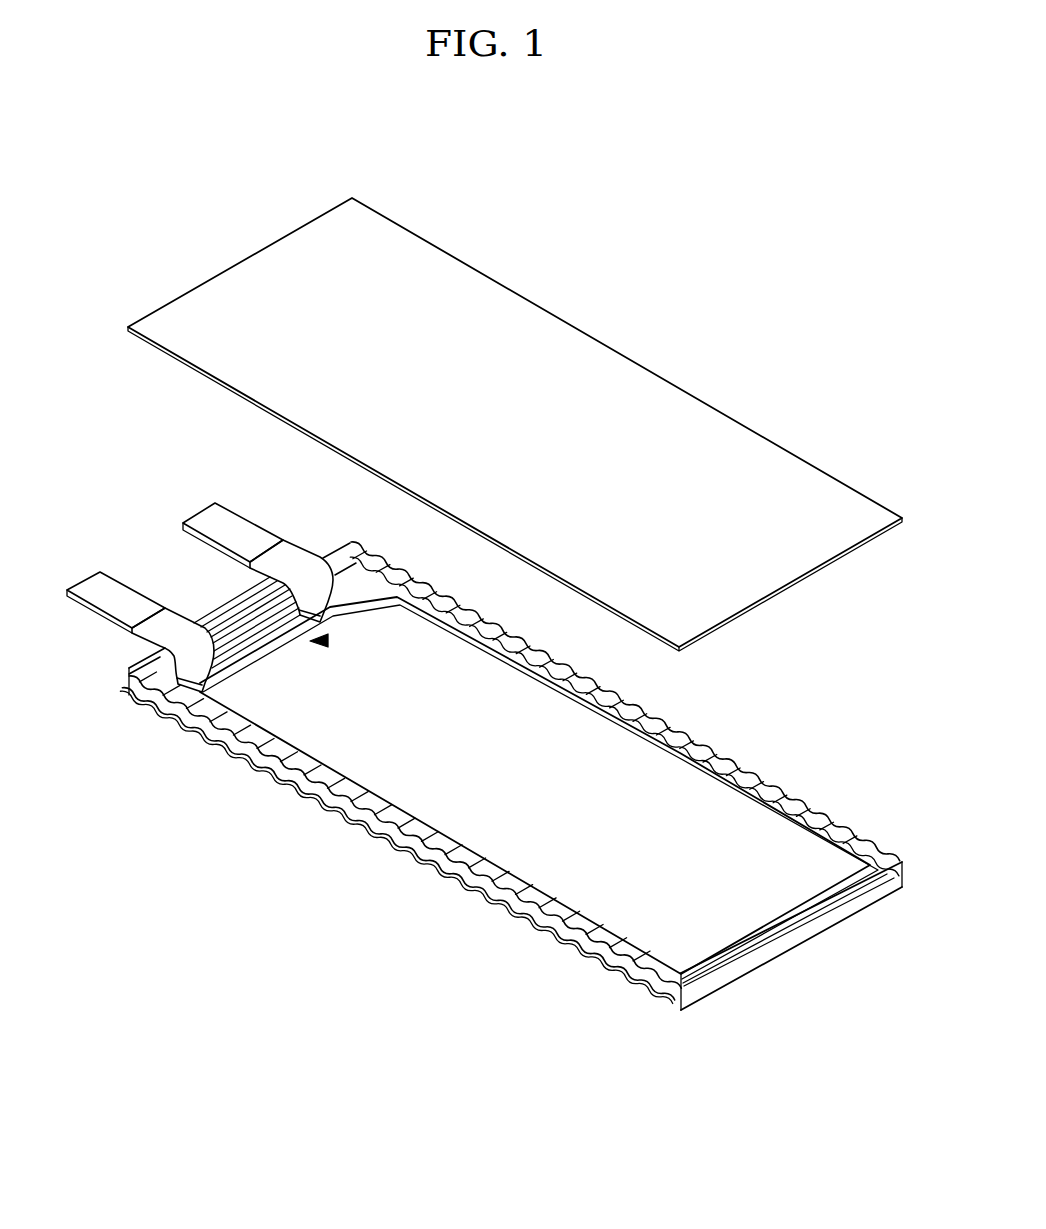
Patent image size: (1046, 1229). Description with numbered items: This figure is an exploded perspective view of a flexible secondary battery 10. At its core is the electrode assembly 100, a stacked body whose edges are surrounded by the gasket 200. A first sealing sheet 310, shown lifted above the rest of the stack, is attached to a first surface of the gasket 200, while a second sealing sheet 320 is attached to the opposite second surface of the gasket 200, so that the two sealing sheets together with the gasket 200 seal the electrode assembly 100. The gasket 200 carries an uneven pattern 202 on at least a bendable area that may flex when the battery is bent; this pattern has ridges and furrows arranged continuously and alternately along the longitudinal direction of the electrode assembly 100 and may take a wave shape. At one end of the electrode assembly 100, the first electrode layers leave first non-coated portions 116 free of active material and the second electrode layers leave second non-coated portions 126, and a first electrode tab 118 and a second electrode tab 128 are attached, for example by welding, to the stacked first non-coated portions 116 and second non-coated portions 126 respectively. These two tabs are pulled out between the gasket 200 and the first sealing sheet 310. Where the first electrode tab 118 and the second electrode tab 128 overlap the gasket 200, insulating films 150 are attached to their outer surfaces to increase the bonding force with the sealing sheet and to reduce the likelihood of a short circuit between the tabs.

The flexible secondary battery 10 is at (808, 383).
The electrode assembly 100 is at (656, 764).
The first non-coated portion 116 is at (227, 695).
The first electrode tab 118 is at (106, 580).
The second non-coated portion 126 is at (388, 603).
The second electrode tab 128 is at (226, 520).
The insulating film 150 is at (175, 620).
The gasket 200 is at (890, 856).
The uneven pattern 202 is at (791, 802).
The first sealing sheet 310 is at (861, 503).
The second sealing sheet 320 is at (780, 955).